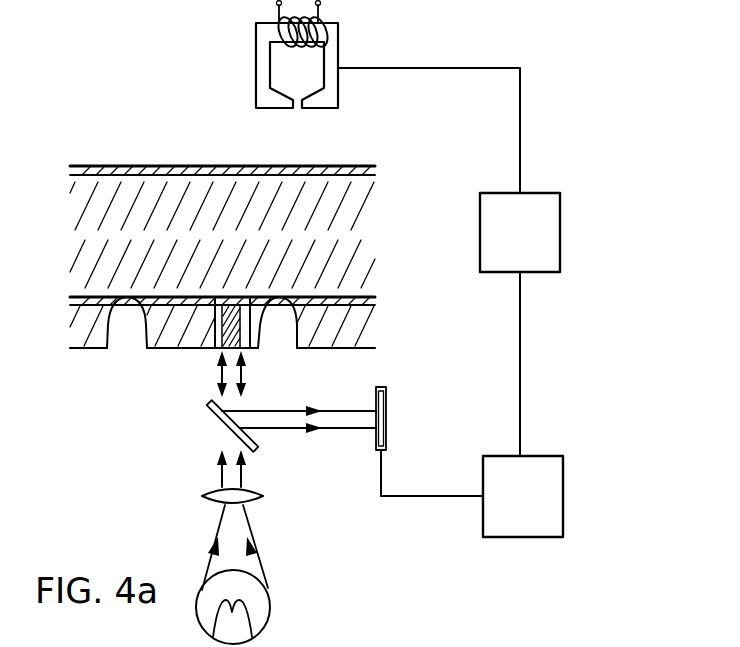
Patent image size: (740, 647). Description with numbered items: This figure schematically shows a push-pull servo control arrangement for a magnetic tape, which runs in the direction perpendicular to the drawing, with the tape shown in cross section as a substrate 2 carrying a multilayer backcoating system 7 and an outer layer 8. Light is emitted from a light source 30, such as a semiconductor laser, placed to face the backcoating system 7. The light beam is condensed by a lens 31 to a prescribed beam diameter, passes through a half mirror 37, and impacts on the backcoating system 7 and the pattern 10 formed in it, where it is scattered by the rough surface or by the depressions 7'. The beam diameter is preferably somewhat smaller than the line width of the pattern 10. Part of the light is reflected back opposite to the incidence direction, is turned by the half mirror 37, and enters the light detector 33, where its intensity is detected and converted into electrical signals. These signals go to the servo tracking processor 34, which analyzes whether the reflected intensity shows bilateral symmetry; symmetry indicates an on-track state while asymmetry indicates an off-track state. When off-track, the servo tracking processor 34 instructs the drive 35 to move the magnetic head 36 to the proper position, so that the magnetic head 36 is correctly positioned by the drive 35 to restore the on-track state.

The substrate 2 is at (372, 235).
The multilayer backcoating system 7 is at (201, 340).
The depressions 7' is at (207, 338).
The surface layer 8 is at (375, 170).
The pattern 10 is at (222, 348).
The light source 30 is at (270, 608).
The lens 31 is at (263, 497).
The light detector 33 is at (386, 391).
The servo tracking processor 34 is at (563, 500).
The drive 35 is at (560, 233).
The magnetic head 36 is at (340, 40).
The half mirror 37 is at (208, 412).